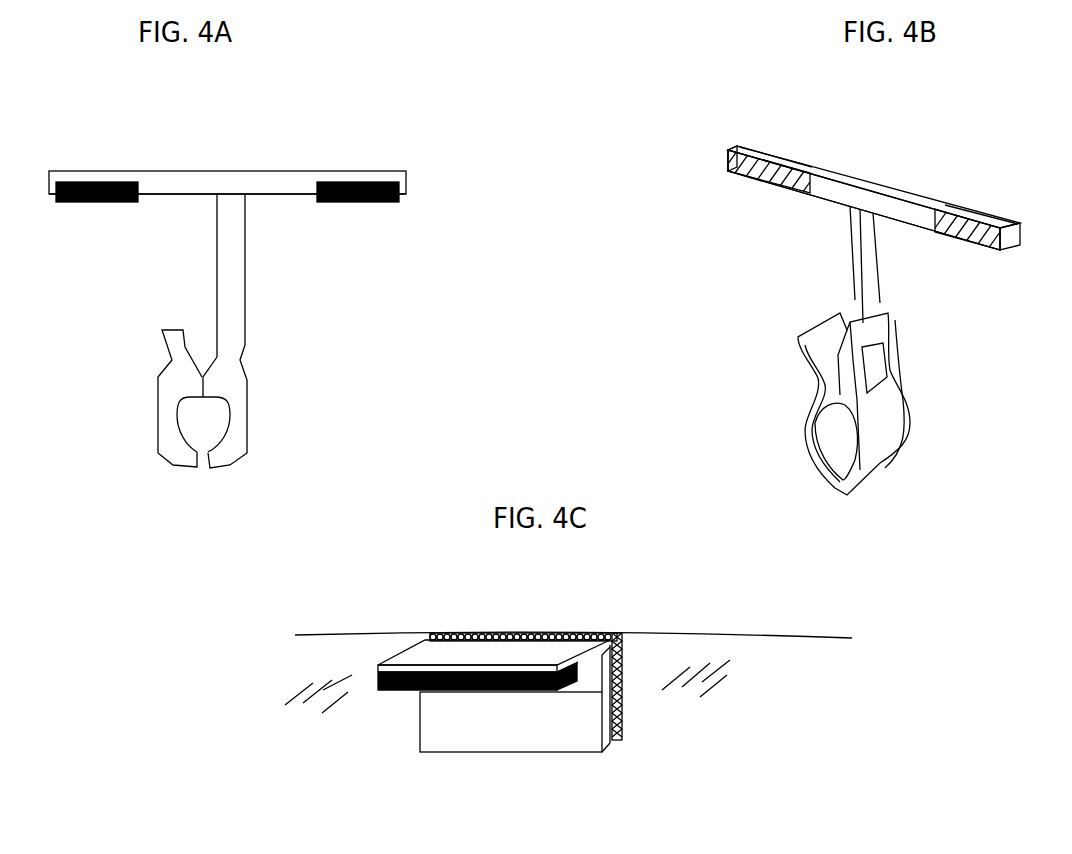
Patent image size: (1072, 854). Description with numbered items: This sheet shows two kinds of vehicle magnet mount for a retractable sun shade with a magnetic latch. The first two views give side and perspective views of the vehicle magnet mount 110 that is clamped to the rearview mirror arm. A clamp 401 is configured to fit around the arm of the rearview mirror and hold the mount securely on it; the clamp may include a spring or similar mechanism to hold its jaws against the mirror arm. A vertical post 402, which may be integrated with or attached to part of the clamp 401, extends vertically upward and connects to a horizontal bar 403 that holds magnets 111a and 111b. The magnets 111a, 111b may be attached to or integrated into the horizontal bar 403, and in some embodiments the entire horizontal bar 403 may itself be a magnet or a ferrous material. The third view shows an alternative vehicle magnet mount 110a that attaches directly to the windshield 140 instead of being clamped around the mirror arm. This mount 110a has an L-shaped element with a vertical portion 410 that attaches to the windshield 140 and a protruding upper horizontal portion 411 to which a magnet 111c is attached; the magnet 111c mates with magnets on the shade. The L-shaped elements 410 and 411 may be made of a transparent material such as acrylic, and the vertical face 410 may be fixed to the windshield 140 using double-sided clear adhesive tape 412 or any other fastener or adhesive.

In FIG. 4A, the vehicle magnet mount 110 is at (220, 171).
In FIG. 4B, the vehicle magnet mount 110 is at (874, 187).
In FIG. 4C, the vehicle magnet mount 110a is at (521, 612).
In FIG. 4A, the magnet 111a is at (92, 182).
In FIG. 4B, the magnet 111a is at (768, 155).
In FIG. 4A, the magnet 111b is at (350, 182).
In FIG. 4B, the magnet 111b is at (990, 215).
In FIG. 4C, the magnet 111c is at (393, 692).
In FIG. 4C, the windshield 140 is at (783, 668).
In FIG. 4A, the clamp 401 is at (172, 413).
In FIG. 4B, the clamp 401 is at (827, 392).
In FIG. 4A, the vertical post 402 is at (229, 278).
In FIG. 4B, the vertical post 402 is at (853, 233).
In FIG. 4A, the horizontal bar 403 is at (281, 183).
In FIG. 4B, the horizontal bar 403 is at (908, 215).
In FIG. 4C, the vertical portion 410 is at (508, 727).
In FIG. 4C, the upper horizontal portion 411 is at (442, 654).
In FIG. 4C, the double-sided clear adhesive tape 412 is at (617, 722).